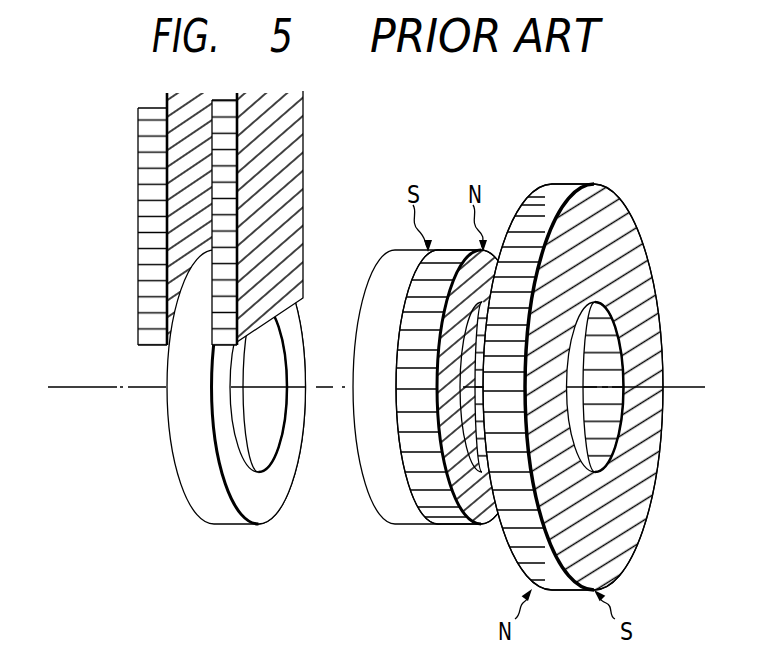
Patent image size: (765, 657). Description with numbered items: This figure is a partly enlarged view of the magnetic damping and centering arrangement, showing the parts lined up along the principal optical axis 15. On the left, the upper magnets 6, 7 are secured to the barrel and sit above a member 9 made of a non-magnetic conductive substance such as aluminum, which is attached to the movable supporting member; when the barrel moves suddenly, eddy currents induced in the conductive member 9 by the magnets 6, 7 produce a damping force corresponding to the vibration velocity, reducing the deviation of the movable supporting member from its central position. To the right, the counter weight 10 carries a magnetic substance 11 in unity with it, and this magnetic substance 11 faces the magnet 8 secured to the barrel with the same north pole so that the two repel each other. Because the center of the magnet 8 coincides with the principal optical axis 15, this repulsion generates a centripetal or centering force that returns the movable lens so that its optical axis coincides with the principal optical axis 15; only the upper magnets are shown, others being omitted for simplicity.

The magnet 6 is at (138, 127).
The magnet 7 is at (303, 138).
The magnet 8 is at (592, 183).
The member of non-magnetic conductive substance 9 is at (185, 503).
The counter weight 10 is at (373, 508).
The magnetic substance 11 is at (455, 525).
The principal optical axis 15 is at (78, 387).